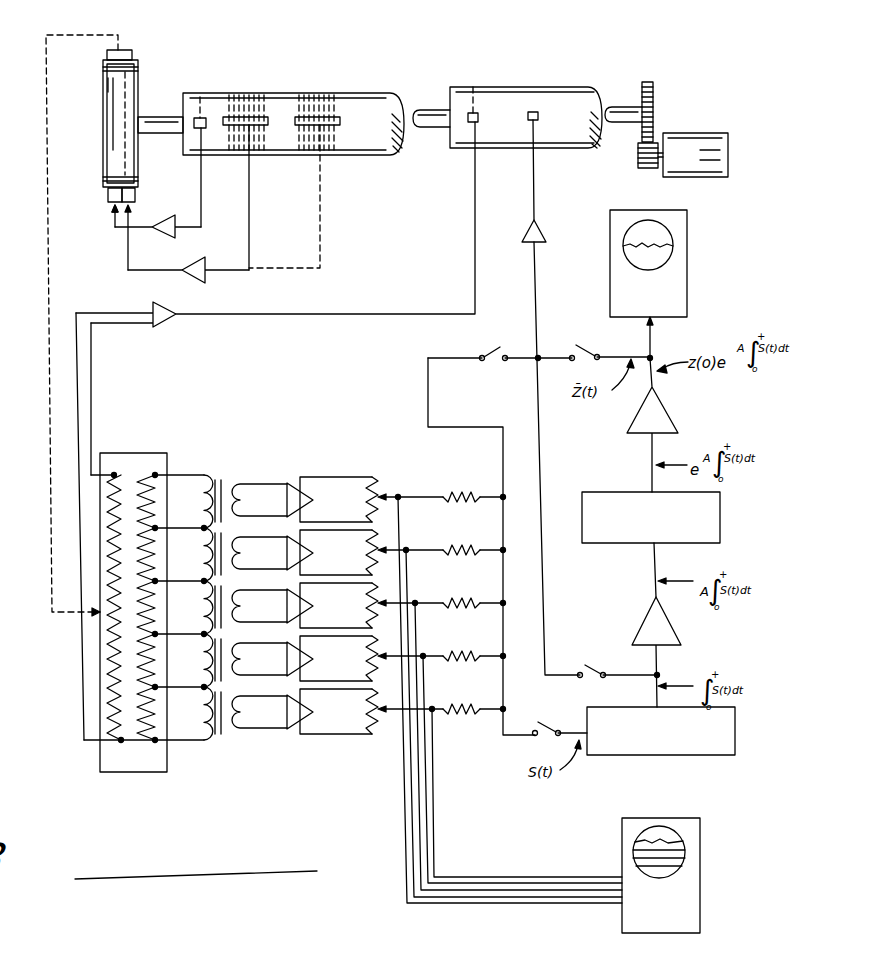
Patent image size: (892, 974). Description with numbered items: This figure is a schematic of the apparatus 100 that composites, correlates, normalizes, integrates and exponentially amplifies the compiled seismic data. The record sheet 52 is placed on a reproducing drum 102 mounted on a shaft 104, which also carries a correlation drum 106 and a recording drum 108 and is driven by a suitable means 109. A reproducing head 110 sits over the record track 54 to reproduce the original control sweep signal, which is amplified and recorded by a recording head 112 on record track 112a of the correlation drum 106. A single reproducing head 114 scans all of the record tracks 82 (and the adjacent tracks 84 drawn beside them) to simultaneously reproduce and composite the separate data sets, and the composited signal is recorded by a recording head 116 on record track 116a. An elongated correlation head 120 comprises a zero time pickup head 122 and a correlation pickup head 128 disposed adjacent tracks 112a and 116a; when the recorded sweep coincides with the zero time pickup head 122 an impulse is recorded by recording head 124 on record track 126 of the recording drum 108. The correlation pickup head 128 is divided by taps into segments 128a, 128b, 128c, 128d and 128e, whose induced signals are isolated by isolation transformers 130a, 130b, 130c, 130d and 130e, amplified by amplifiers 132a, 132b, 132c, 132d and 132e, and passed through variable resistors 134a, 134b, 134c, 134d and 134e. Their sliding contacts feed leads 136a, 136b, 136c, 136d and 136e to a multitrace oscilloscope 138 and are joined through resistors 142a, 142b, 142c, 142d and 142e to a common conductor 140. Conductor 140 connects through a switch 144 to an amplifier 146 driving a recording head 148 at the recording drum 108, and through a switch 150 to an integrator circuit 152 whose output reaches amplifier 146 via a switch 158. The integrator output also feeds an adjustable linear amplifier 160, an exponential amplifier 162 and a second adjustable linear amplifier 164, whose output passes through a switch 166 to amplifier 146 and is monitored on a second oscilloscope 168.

The record sheet 52 is at (352, 97).
The record track 54 is at (206, 90).
The record tracks 82 is at (265, 91).
The brush assembly 84 is at (337, 91).
The apparatus 100 is at (291, 56).
The reproducing drum 102 is at (180, 95).
The shaft 104 is at (160, 134).
The correlation drum 106 is at (103, 133).
The recording drum 108 is at (448, 92).
The drive means 109 is at (696, 133).
The reproducing head 110 is at (206, 128).
The recording head 112 is at (108, 198).
The record track 112a is at (108, 86).
The reproducing head 114 is at (268, 125).
The recording head 116 is at (135, 196).
The record track 116a is at (121, 151).
The correlation head 120 is at (132, 52).
The zero time pickup head 122 is at (100, 684).
The recording head 124 is at (470, 124).
The record track 126 is at (476, 95).
The correlation pickup head 128 is at (143, 474).
The segment 128a is at (158, 501).
The segment 128b is at (158, 554).
The segment 128c is at (158, 607).
The segment 128d is at (158, 660).
The segment 128e is at (158, 713).
The isolation transformer 130a is at (224, 482).
The isolation transformer 130b is at (224, 535).
The isolation transformer 130c is at (224, 588).
The isolation transformer 130d is at (224, 641).
The isolation transformer 130e is at (224, 694).
The amplifier 132a is at (293, 483).
The amplifier 132b is at (299, 553).
The amplifier 132c is at (299, 606).
The amplifier 132d is at (299, 659).
The amplifier 132e is at (299, 712).
The variable resistor 134a is at (378, 486).
The variable resistor 134b is at (384, 542).
The variable resistor 134c is at (364, 607).
The variable resistor 134d is at (364, 660).
The variable resistor 134e is at (364, 713).
The lead 136a is at (402, 775).
The lead 136b is at (410, 794).
The lead 136c is at (418, 812).
The lead 136d is at (429, 820).
The lead 136e is at (435, 838).
The multitrace oscilloscope 138 is at (645, 818).
The common conductor 140 is at (503, 482).
The resistor 142a is at (452, 502).
The resistor 142b is at (454, 557).
The resistor 142c is at (452, 600).
The resistor 142d is at (448, 652).
The resistor 142e is at (452, 704).
The switch 144 is at (490, 350).
The amplifier 146 is at (524, 226).
The recording head 148 is at (540, 112).
The switch 150 is at (556, 720).
The integrator circuit 152 is at (705, 757).
The switch 158 is at (600, 662).
The linear amplifier 160 is at (678, 627).
The exponential amplifier 162 is at (720, 512).
The linear amplifier 164 is at (672, 413).
The switch 166 is at (597, 346).
The oscilloscope 168 is at (687, 292).